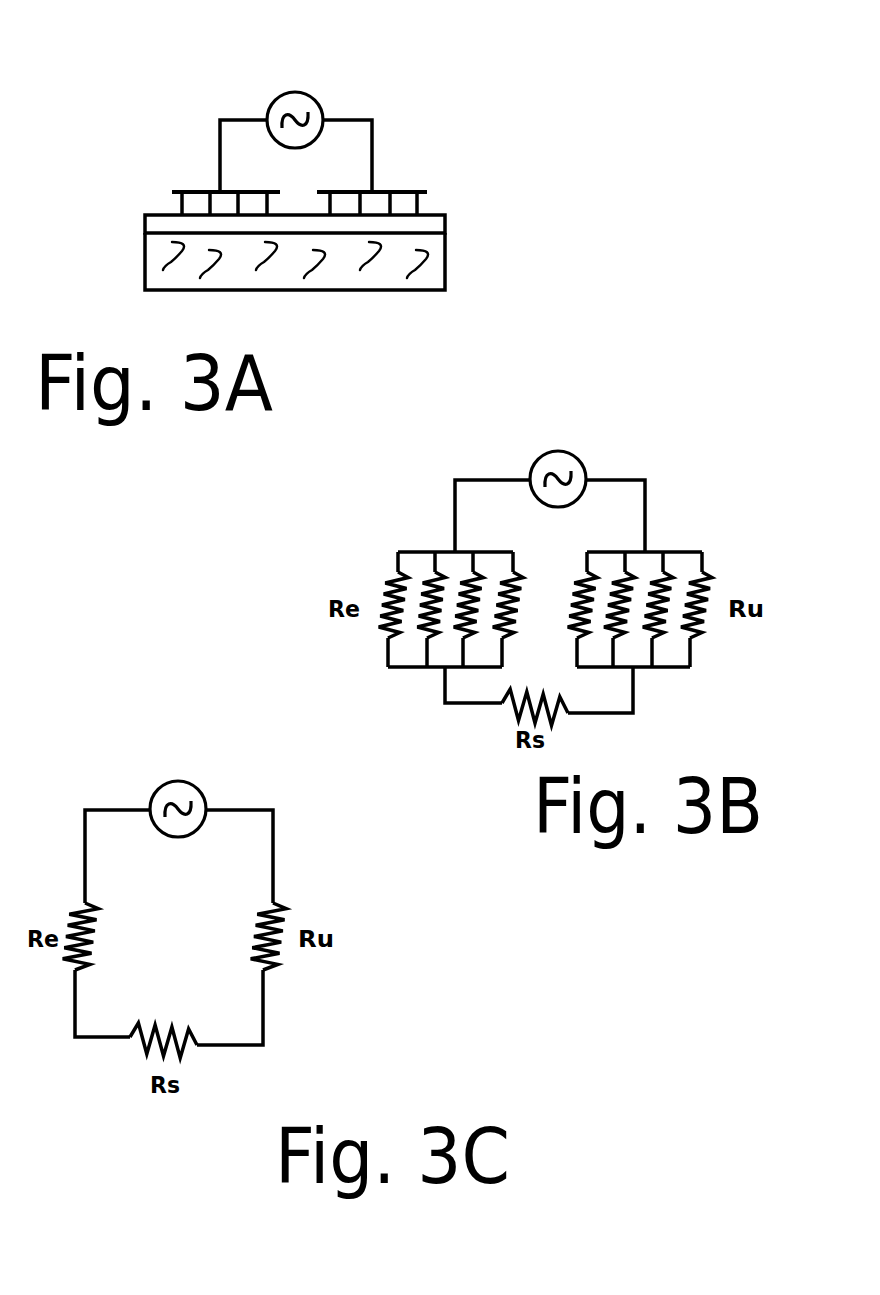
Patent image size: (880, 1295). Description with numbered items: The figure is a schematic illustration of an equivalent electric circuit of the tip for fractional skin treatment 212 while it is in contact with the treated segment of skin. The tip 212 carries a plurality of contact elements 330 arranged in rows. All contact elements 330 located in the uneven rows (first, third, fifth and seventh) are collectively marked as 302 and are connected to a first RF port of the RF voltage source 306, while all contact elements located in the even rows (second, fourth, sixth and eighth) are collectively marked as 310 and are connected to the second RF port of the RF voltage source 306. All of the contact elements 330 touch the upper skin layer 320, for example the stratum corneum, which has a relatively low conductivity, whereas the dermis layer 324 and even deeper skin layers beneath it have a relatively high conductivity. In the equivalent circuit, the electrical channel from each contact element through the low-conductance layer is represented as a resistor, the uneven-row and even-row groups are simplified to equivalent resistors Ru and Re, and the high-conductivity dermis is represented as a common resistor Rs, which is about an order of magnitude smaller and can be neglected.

In FIG. 3A, the tip for fractional skin treatment 212 is at (408, 148).
In FIG. 3A, the contact elements in uneven rows 302 is at (192, 189).
In FIG. 3A, the RF voltage source 306 is at (314, 97).
In FIG. 3B, the RF voltage source 306 is at (571, 452).
In FIG. 3C, the RF voltage source 306 is at (186, 784).
In FIG. 3A, the contact elements in even rows 310 is at (393, 188).
In FIG. 3A, the upper skin layer 320 is at (163, 210).
In FIG. 3A, the dermis layer 324 is at (447, 268).
In FIG. 3A, the contact elements 330 is at (430, 194).